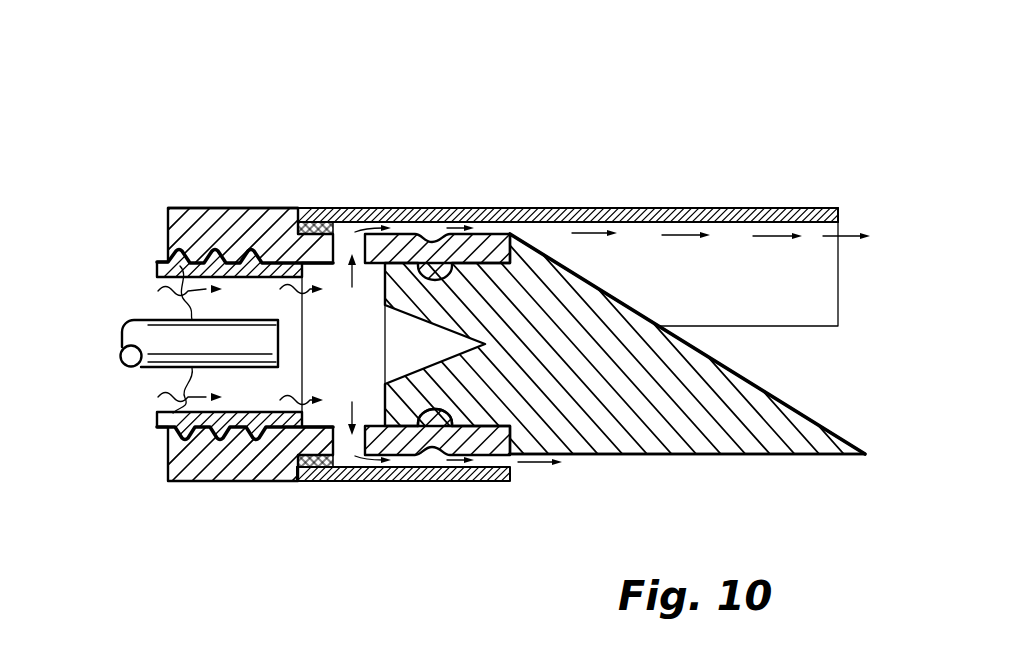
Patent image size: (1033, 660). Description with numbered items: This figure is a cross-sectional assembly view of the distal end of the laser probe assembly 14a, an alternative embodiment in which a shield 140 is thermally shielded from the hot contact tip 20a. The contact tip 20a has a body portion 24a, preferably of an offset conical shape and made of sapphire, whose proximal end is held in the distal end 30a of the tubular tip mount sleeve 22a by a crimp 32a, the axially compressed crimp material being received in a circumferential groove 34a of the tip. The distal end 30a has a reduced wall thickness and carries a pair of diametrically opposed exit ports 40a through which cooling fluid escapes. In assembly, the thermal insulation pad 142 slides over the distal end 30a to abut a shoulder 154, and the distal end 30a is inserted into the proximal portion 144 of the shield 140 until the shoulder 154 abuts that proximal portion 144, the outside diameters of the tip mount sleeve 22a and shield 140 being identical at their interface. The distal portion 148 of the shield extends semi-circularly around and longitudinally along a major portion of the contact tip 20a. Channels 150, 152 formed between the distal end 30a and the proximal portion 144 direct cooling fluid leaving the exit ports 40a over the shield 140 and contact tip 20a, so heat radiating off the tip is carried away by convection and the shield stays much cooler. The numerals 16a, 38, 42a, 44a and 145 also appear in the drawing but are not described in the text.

The probe assembly 14a is at (187, 87).
The tubular member 16a is at (145, 330).
The contact tip 20a is at (780, 455).
The tip mount sleeve 22a is at (212, 198).
The body portion 24a is at (667, 435).
The distal end of tip mount sleeve 30a is at (497, 232).
The crimp 32a is at (443, 440).
The circumferential groove 34a is at (400, 410).
The cavity 38 is at (385, 286).
The exit ports 40a is at (352, 206).
The tapered surface 42a is at (803, 401).
The lower housing member 44a is at (160, 418).
The shield 140 is at (666, 205).
The thermal insulation pad 142 is at (321, 222).
The proximal portion of shield 144 is at (418, 207).
The lower spacer ring 145 is at (310, 483).
The distal portion of shield 148 is at (785, 208).
The channel 150 is at (535, 218).
The channel 152 is at (510, 455).
The shoulder 154 is at (267, 206).